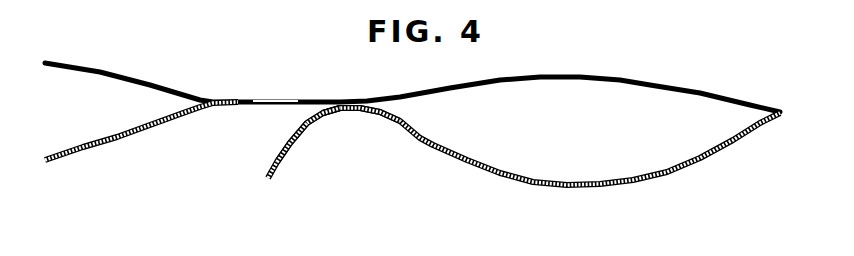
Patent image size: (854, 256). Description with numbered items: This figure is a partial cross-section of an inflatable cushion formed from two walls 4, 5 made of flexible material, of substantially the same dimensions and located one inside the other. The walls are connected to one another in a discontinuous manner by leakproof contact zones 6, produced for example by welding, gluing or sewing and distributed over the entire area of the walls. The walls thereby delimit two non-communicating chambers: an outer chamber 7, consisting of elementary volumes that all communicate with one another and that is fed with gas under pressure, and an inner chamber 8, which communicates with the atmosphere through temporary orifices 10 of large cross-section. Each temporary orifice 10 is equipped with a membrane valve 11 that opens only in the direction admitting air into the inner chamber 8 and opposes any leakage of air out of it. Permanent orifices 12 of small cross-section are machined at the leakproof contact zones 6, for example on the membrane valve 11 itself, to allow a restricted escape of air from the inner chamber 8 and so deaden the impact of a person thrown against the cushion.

The wall 4 is at (592, 77).
The wall 5 is at (601, 188).
The leakproof contact zone 6 is at (357, 103).
The outer chamber 7 is at (625, 122).
The inner chamber 8 is at (221, 98).
The temporary orifice 10 is at (272, 98).
The membrane valve 11 is at (318, 131).
The permanent orifice 12 is at (300, 148).